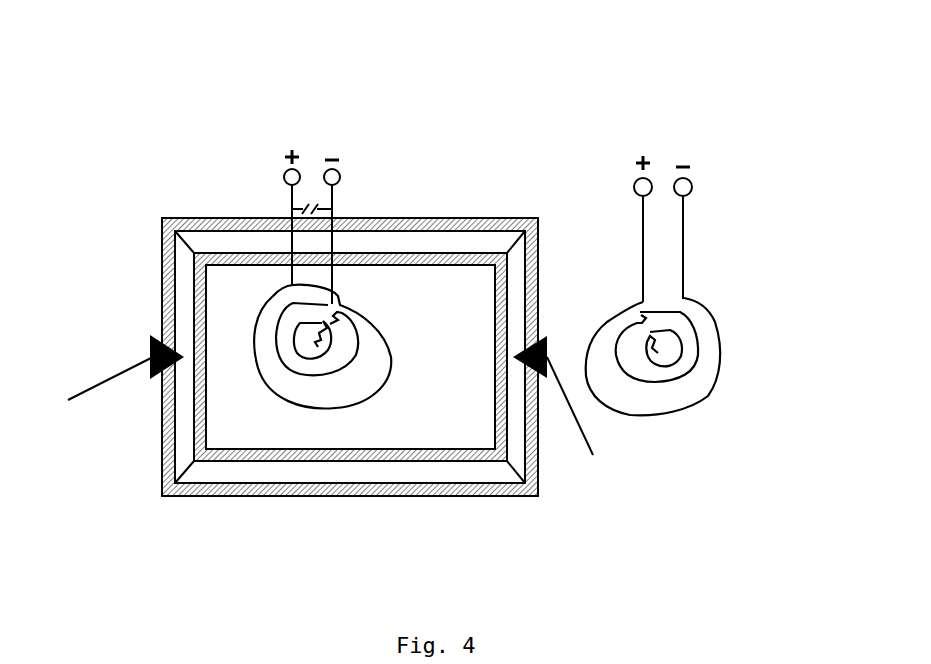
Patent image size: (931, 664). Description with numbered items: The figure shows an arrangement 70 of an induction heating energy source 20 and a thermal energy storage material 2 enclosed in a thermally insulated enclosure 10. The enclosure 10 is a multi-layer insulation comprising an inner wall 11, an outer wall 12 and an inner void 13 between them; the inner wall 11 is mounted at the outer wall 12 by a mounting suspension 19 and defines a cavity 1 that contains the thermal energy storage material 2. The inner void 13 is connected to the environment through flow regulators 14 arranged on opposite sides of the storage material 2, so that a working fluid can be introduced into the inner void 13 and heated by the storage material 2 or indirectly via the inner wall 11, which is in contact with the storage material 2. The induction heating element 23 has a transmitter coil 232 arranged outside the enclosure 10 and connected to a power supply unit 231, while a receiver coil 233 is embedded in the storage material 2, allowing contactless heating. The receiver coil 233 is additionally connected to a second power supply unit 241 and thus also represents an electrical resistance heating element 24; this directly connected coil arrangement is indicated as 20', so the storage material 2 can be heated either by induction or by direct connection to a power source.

The cavity 1 is at (342, 447).
The thermal energy storage material 2 is at (387, 430).
The thermally insulated enclosure 10 is at (442, 205).
The inner wall 11 is at (202, 422).
The outer wall 12 is at (532, 443).
The inner void 13 is at (453, 468).
The flow regulator 14 is at (325, 410).
The mounting suspension 19 is at (183, 467).
The energy source 20 is at (715, 227).
The embedded coil assembly 20' is at (226, 224).
The induction heating element 23 is at (657, 350).
The power supply unit 231 is at (692, 183).
The transmitter coil 232 is at (721, 369).
The receiver coil 233 is at (253, 318).
The electrical resistance heating element 24 is at (297, 207).
The second power supply unit 241 is at (286, 174).
The arrangement 70 is at (433, 118).